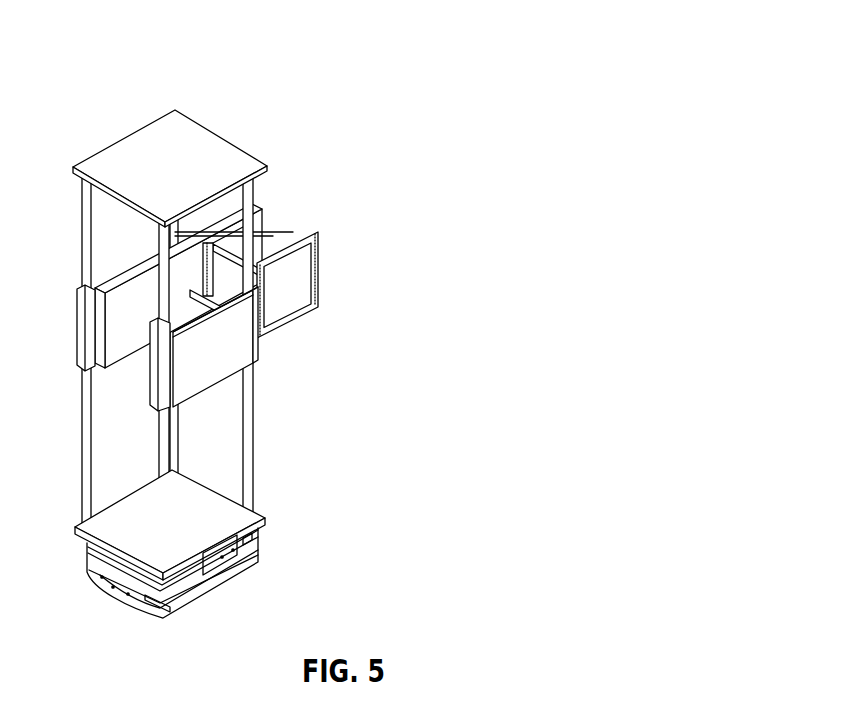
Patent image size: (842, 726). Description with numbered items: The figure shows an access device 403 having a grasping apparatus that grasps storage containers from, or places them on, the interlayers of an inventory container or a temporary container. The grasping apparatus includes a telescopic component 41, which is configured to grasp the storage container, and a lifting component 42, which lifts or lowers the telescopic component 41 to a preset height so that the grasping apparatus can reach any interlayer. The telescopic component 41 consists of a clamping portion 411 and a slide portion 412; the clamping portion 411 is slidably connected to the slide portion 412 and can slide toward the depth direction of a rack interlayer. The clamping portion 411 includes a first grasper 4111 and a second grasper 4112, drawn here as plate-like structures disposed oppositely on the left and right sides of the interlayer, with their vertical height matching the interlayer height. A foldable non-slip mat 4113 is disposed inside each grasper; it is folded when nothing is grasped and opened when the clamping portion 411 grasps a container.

The access device 403 is at (361, 326).
The telescopic component 41 is at (368, 371).
The clamping portion 411 is at (320, 371).
The first grasper 4111 is at (253, 215).
The second grasper 4112 is at (298, 249).
The non-slip mat 4113 is at (293, 233).
The slide portion 412 is at (236, 288).
The lifting component 42 is at (212, 347).